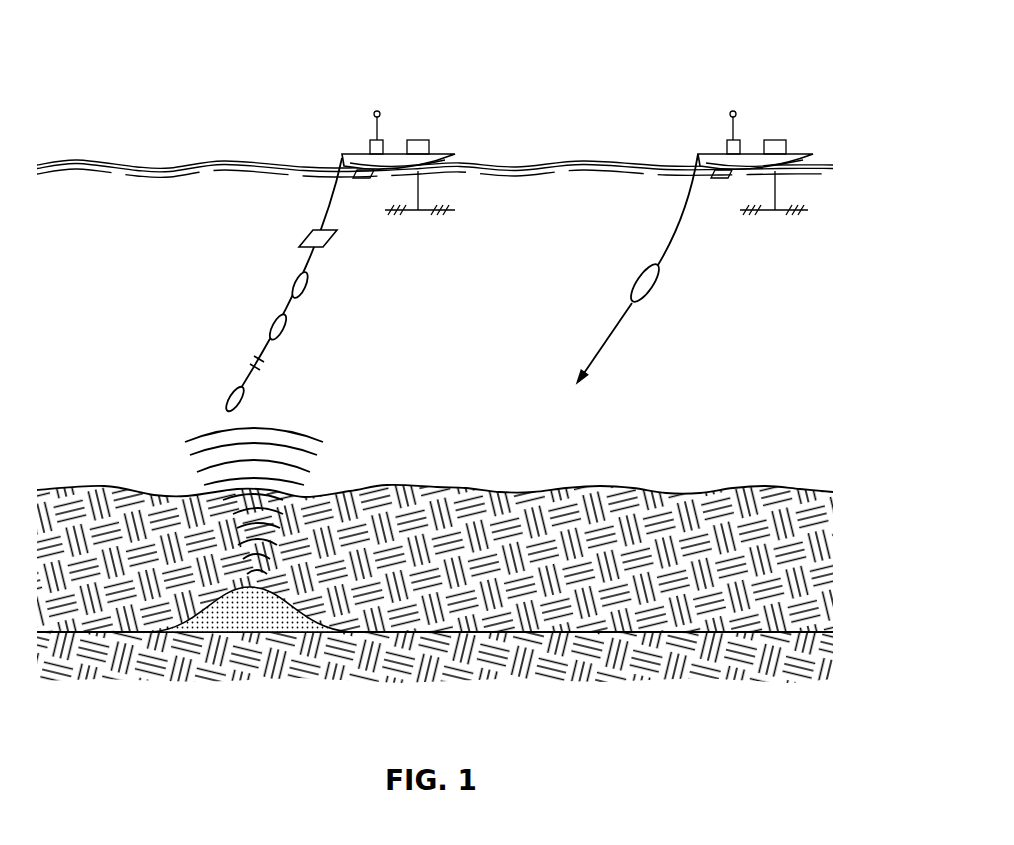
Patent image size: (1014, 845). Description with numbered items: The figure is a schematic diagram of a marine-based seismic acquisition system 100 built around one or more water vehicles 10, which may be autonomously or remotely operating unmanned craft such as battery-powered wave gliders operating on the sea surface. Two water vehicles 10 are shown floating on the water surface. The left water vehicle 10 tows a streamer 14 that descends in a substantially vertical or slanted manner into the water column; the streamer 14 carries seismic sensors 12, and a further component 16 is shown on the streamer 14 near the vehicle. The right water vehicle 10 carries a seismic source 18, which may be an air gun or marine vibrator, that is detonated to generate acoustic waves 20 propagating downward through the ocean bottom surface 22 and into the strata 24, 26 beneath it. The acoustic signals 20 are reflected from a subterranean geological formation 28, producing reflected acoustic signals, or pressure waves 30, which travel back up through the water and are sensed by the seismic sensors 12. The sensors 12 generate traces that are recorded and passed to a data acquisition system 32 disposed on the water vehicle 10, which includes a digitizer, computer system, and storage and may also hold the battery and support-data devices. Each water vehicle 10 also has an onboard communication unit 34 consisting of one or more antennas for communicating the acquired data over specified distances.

The marine-based seismic acquisition system 100 is at (187, 37).
The water vehicle 10 is at (445, 150).
The data acquisition system 32 is at (412, 140).
The onboard communication unit 34 is at (373, 128).
The sensors 12 is at (293, 280).
The streamer 14 is at (313, 258).
The depth control / unit 16 is at (302, 232).
The seismic source 18 is at (633, 281).
The acoustic waves 20 is at (610, 340).
The ocean bottom surface 22 is at (640, 488).
The stratum 24 is at (392, 621).
The stratum 26 is at (427, 668).
The subterranean geological formation 28 is at (267, 622).
The reflected acoustic signals 30 is at (325, 411).